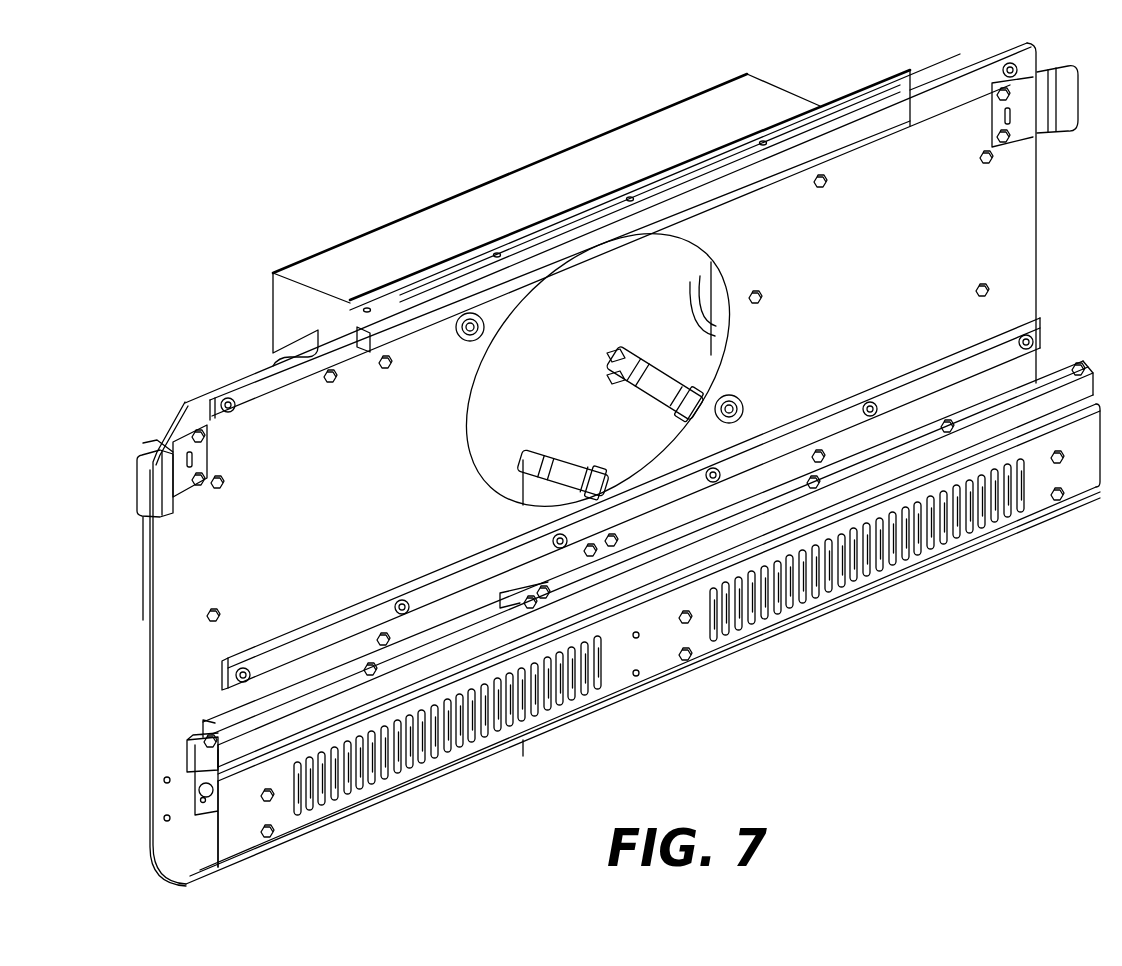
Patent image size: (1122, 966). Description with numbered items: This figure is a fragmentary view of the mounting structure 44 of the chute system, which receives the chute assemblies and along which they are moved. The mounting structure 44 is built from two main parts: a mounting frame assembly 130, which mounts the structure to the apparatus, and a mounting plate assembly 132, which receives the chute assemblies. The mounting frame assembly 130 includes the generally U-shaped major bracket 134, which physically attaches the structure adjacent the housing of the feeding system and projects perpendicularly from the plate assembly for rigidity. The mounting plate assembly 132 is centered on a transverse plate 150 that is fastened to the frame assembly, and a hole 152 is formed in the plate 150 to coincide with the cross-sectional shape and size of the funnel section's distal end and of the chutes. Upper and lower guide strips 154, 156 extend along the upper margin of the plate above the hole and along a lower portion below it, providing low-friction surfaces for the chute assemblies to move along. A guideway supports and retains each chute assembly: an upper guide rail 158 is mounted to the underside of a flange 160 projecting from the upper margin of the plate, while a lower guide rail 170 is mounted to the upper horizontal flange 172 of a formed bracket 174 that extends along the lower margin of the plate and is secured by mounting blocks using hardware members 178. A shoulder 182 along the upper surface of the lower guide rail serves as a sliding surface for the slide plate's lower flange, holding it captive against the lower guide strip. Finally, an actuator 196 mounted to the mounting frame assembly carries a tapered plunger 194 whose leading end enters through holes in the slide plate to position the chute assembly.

The mounting structure 44 is at (360, 78).
The mounting frame assembly 130 is at (515, 150).
The mounting plate assembly 132 is at (122, 618).
The major bracket 134 is at (707, 113).
The transverse plate 150 is at (196, 548).
The hole 152 is at (497, 392).
The upper guide strip 154 is at (253, 390).
The lower guide strip 156 is at (240, 693).
The upper guide rail 158 is at (513, 280).
The flange 160 is at (860, 98).
The lower guide rail 170 is at (268, 737).
The upper horizontal flange 172 is at (343, 730).
The formed bracket 174 is at (230, 817).
The hardware members 178 is at (690, 660).
The shoulder 182 is at (197, 747).
The tapered plunger 194 is at (463, 313).
The actuator 196 is at (650, 370).